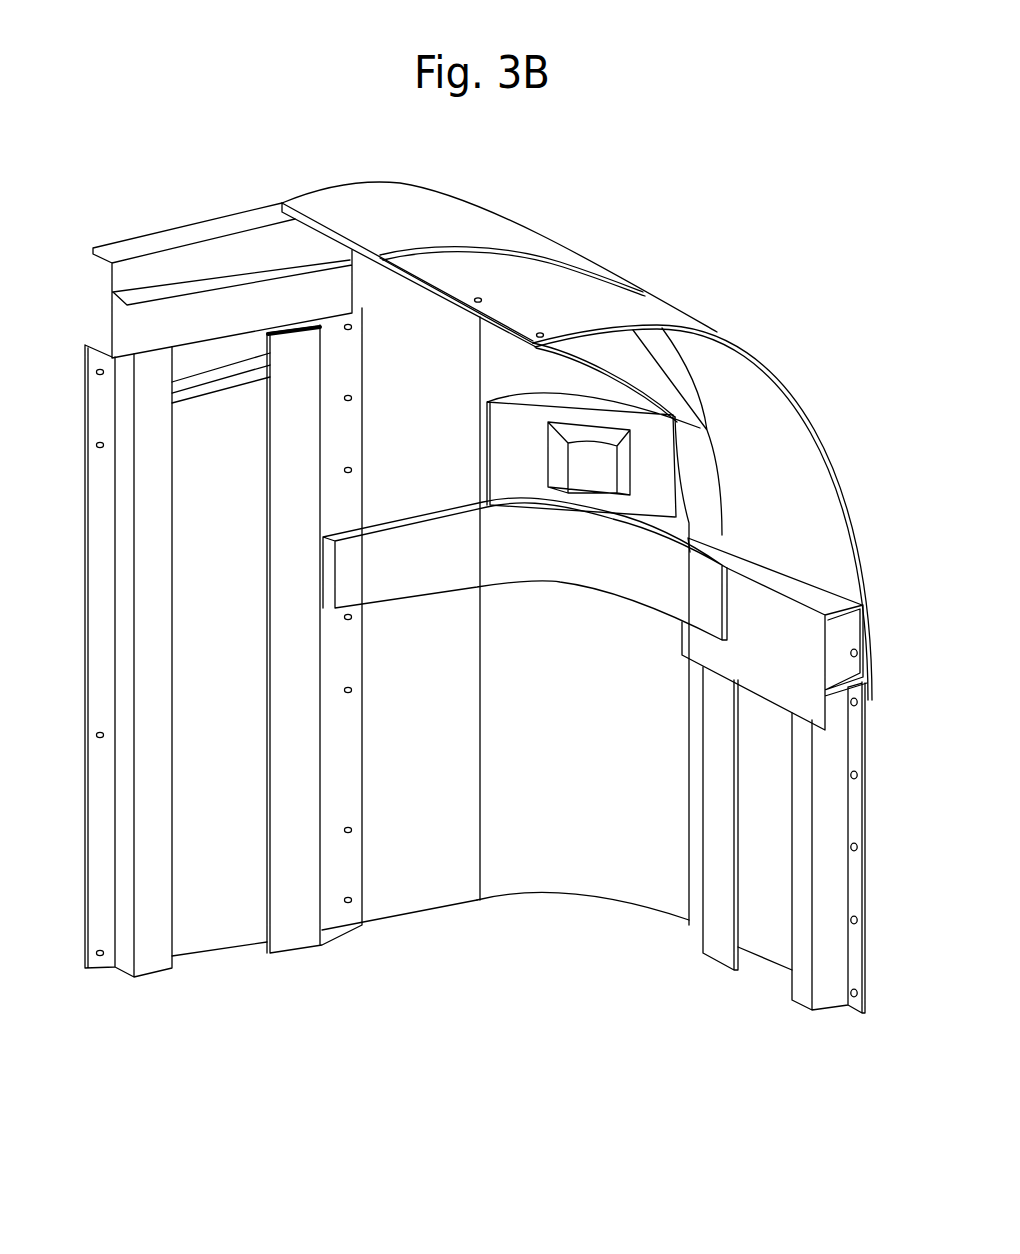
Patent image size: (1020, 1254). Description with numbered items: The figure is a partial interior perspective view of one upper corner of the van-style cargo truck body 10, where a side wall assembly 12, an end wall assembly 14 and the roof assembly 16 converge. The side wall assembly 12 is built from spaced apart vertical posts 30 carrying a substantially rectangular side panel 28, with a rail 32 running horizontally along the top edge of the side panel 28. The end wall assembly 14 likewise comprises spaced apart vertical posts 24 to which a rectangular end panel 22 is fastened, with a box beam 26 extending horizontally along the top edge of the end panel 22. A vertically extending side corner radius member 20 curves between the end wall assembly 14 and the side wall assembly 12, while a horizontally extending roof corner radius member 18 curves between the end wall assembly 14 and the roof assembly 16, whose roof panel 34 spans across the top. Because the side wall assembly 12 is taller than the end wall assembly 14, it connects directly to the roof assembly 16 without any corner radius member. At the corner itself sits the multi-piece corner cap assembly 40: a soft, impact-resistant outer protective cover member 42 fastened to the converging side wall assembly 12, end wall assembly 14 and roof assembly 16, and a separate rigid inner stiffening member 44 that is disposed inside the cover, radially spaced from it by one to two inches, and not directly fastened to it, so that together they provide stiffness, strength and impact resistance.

The van-style cargo truck body 10 is at (707, 277).
The side wall assembly 12 is at (202, 966).
The end wall assembly 14 is at (881, 873).
The roof assembly 16 is at (446, 308).
The roof corner radius member 18 is at (832, 428).
The side corner radius member 20 is at (147, 960).
The end panel 22 is at (773, 945).
The vertical post 24 is at (716, 945).
The box beam 26 is at (850, 632).
The side panel 28 is at (252, 930).
The vertical post 30 is at (298, 948).
The rail 32 is at (110, 282).
The roof panel 34 is at (523, 312).
The multi-piece corner cap assembly 40 is at (458, 184).
The protective cover member 42 is at (520, 208).
The stiffening member 44 is at (551, 596).